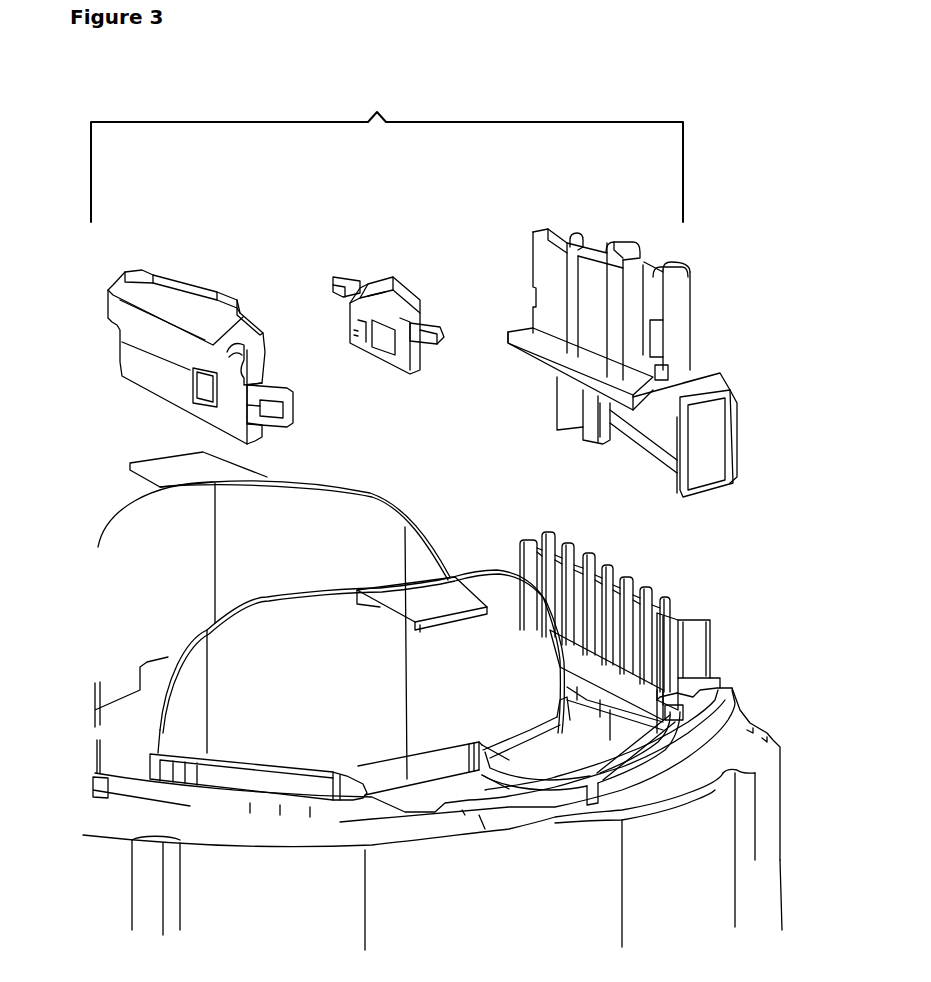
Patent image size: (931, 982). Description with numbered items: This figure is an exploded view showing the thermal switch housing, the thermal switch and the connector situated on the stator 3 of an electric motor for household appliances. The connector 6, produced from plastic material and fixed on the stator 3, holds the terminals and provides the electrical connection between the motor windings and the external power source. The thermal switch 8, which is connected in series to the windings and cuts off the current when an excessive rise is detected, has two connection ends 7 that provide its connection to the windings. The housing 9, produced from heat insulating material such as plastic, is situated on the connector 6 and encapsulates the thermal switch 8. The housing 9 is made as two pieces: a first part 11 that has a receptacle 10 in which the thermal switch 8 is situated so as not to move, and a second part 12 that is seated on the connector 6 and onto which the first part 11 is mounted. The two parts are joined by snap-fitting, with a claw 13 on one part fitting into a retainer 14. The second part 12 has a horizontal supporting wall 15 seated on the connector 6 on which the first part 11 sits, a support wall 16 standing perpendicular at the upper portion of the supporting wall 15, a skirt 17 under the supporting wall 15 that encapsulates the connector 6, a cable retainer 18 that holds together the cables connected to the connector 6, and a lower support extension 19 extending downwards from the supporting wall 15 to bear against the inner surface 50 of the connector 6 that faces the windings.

The stator 3 is at (432, 701).
The connector 6 is at (698, 641).
The connection ends 7 is at (344, 275).
The thermal switch 8 is at (392, 298).
The housing 9 is at (387, 150).
The receptacle 10 is at (160, 380).
The first part 11 is at (221, 310).
The second part 12 is at (636, 320).
The claw 13 is at (690, 368).
The retainer 14 is at (290, 414).
The supporting wall 15 is at (530, 360).
The support wall 16 is at (540, 268).
The skirt 17 is at (705, 452).
The cable retainer 18 is at (685, 292).
The lower support extension 19 is at (592, 440).
The inner surface 50 is at (640, 572).